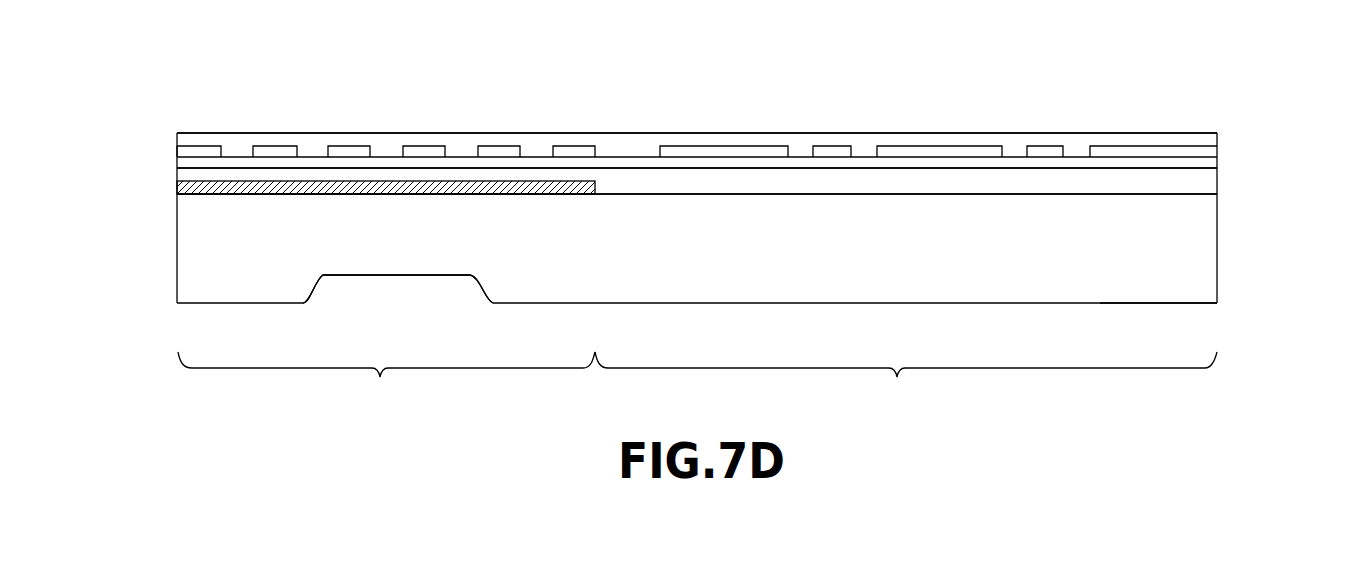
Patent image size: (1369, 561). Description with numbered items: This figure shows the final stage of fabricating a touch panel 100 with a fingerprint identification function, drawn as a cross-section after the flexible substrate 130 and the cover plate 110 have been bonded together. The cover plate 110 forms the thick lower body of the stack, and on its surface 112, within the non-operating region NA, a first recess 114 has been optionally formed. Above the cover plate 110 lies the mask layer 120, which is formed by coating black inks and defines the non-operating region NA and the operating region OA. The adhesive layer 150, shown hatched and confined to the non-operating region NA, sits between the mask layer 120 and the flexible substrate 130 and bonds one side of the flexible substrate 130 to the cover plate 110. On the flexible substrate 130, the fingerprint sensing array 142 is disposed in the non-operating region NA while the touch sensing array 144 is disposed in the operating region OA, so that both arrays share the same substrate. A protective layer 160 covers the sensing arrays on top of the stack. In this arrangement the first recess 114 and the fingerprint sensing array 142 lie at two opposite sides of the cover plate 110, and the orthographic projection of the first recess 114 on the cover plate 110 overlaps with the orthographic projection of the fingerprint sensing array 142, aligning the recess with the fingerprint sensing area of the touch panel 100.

The touch panel 100 is at (136, 55).
The cover plate 110 is at (185, 259).
The surface of the cover plate 112 is at (1193, 303).
The first recess 114 is at (422, 303).
The mask layer 120 is at (180, 184).
The flexible substrate 130 is at (184, 162).
The fingerprint sensing array 142 is at (422, 150).
The touch sensing array 144 is at (905, 153).
The adhesive layer 150 is at (183, 175).
The protective layer 160 is at (1200, 142).